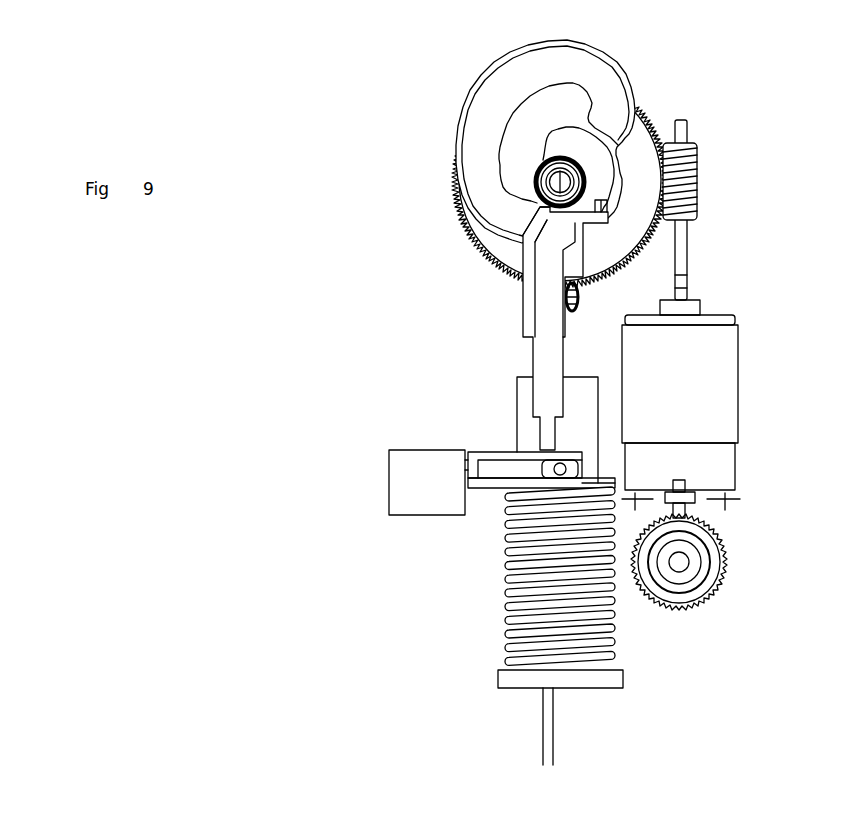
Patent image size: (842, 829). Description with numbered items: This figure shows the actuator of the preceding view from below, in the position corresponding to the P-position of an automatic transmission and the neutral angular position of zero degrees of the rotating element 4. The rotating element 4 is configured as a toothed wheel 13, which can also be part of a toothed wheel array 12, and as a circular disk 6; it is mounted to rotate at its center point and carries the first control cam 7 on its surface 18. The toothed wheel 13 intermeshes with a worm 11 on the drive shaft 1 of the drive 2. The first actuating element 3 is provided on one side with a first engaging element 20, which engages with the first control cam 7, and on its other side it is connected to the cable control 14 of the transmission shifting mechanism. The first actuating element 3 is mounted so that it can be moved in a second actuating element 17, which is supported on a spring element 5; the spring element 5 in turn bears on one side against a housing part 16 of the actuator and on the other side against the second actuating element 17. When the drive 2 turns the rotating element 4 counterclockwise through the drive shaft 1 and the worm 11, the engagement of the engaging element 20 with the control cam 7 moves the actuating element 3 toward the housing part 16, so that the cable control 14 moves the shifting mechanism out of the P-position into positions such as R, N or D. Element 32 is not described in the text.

The drive shaft 1 is at (682, 127).
The drive 2 is at (728, 403).
The first actuating element 3 is at (543, 345).
The rotating element 4 is at (635, 167).
The spring element 5 is at (607, 622).
The circular disk 6 is at (635, 167).
The first control cam 7 is at (560, 60).
The worm 11 is at (695, 177).
The toothed wheel array 12 is at (635, 167).
The toothed wheel 13 is at (643, 117).
The cable control 14 is at (548, 728).
The housing part 16 is at (617, 675).
The second actuating element 17 is at (588, 387).
The surface 18 is at (625, 245).
The first engaging element 20 is at (537, 218).
The control unit 32 is at (442, 537).